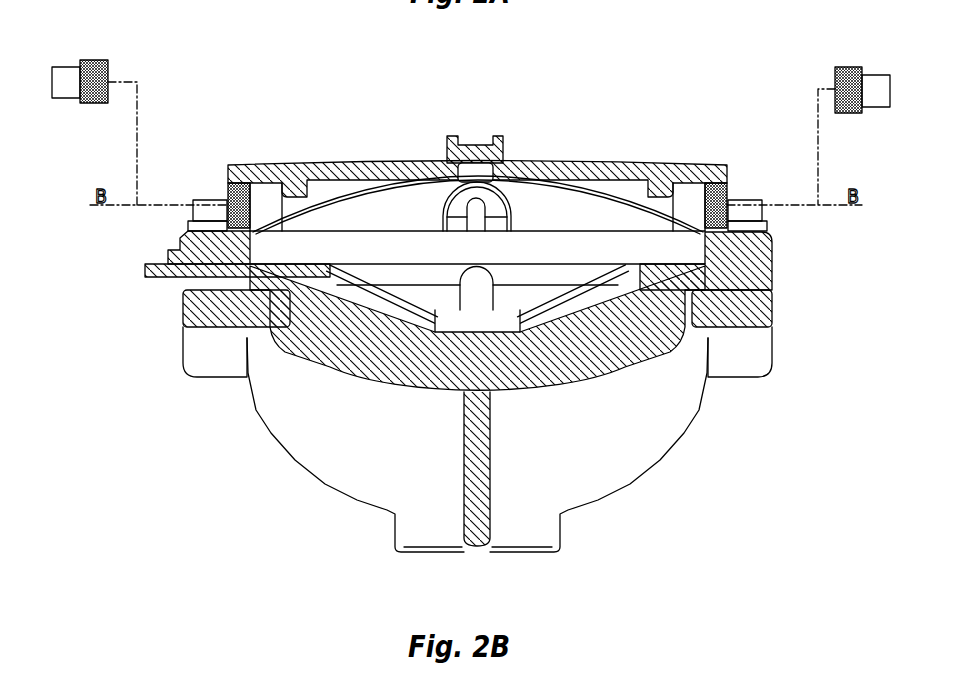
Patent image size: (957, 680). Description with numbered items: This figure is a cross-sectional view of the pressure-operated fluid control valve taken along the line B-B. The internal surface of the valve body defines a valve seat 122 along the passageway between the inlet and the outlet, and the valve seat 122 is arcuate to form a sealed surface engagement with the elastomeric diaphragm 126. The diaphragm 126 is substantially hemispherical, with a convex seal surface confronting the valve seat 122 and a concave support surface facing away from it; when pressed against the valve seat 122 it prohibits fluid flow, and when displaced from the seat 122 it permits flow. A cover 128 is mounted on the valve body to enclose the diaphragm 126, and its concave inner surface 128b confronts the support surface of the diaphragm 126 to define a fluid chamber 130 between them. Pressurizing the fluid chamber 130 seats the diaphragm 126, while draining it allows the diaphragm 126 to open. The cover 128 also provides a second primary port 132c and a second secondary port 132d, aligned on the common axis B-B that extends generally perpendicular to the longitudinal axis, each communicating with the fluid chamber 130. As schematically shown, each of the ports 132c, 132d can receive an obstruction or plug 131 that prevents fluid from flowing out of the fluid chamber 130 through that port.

The valve seat 122 is at (504, 393).
The elastomeric diaphragm 126 is at (378, 346).
The cover 128 is at (360, 163).
The inner surface 128b is at (640, 205).
The fluid chamber 130 is at (394, 222).
The plug 131 is at (72, 67).
The second primary port 132c is at (226, 192).
The second secondary port 132d is at (730, 192).